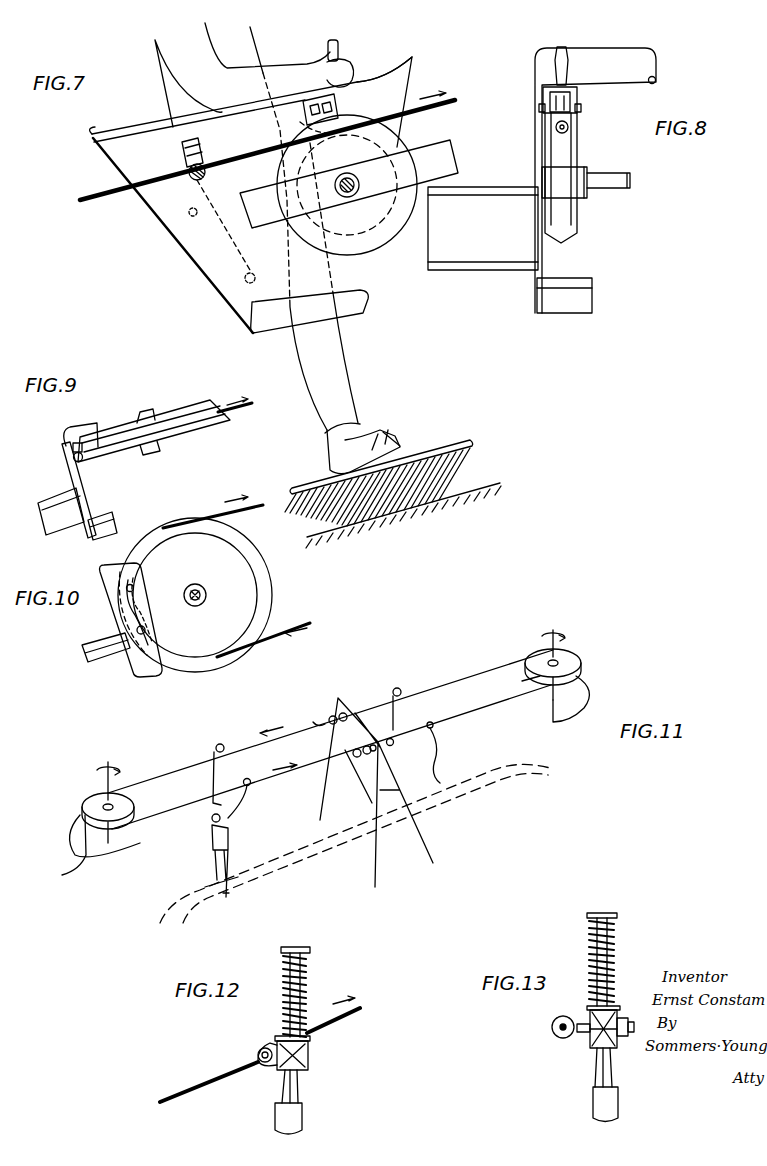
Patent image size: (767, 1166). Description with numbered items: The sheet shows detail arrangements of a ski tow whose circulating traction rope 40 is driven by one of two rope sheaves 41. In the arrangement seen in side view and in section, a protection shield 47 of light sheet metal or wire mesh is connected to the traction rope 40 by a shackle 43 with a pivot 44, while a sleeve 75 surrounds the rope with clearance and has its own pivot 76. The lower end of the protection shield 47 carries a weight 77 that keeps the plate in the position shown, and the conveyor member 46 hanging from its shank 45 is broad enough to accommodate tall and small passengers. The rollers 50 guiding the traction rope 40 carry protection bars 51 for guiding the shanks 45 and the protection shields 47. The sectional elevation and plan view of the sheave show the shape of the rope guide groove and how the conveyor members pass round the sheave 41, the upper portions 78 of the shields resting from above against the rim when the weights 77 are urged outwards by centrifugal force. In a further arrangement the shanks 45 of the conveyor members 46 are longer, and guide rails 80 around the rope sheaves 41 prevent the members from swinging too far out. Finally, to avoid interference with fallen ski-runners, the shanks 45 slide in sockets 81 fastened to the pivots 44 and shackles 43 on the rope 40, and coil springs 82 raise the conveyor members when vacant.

In FIG. 7, the circulating traction rope 40 is at (280, 145).
In FIG. 9, the circulating traction rope 40 is at (235, 396).
In FIG. 10, the circulating traction rope 40 is at (249, 576).
In FIG. 11, the circulating traction rope 40 is at (330, 739).
In FIG. 12, the circulating traction rope 40 is at (348, 1018).
In FIG. 13, the circulating traction rope 40 is at (555, 1032).
In FIG. 9, the rope sheaves 41 is at (187, 430).
In FIG. 11, the rope sheaves 41 is at (102, 797).
In FIG. 7, the pivotal shackles 43 is at (340, 128).
In FIG. 8, the pivotal shackles 43 is at (569, 128).
In FIG. 9, the pivotal shackles 43 is at (93, 460).
In FIG. 10, the pivotal shackles 43 is at (135, 585).
In FIG. 11, the pivotal shackles 43 is at (336, 754).
In FIG. 13, the pivotal shackles 43 is at (553, 1022).
In FIG. 7, the pivot 44 is at (338, 106).
In FIG. 8, the pivot 44 is at (578, 97).
In FIG. 11, the shank 45 is at (237, 817).
In FIG. 12, the shank 45 is at (302, 1115).
In FIG. 13, the shank 45 is at (598, 1098).
In FIG. 7, the conveyor member 46 is at (245, 270).
In FIG. 8, the conveyor member 46 is at (482, 252).
In FIG. 9, the conveyor member 46 is at (53, 500).
In FIG. 10, the conveyor member 46 is at (83, 653).
In FIG. 11, the conveyor member 46 is at (212, 858).
In FIG. 7, the protection shield 47 is at (150, 202).
In FIG. 8, the protection shield 47 is at (535, 120).
In FIG. 10, the protection shield 47 is at (103, 582).
In FIG. 7, the rollers 50 is at (386, 236).
In FIG. 8, the rollers 50 is at (578, 228).
In FIG. 11, the rollers 50 is at (328, 727).
In FIG. 7, the protection bars 51 is at (440, 156).
In FIG. 8, the protection bars 51 is at (572, 177).
In FIG. 11, the protection bars 51 is at (322, 722).
In FIG. 7, the sleeve 75 is at (206, 153).
In FIG. 10, the sleeve 75 is at (150, 627).
In FIG. 7, the pivot 76 is at (183, 153).
In FIG. 7, the weight 77 is at (262, 322).
In FIG. 8, the weight 77 is at (592, 297).
In FIG. 9, the weight 77 is at (110, 518).
In FIG. 7, the upper portions 78 is at (413, 58).
In FIG. 8, the upper portions 78 is at (653, 84).
In FIG. 9, the upper portions 78 is at (70, 428).
In FIG. 10, the upper portions 78 is at (139, 600).
In FIG. 11, the guide rails 80 is at (605, 687).
In FIG. 12, the sockets 81 is at (308, 1072).
In FIG. 13, the sockets 81 is at (605, 1042).
In FIG. 12, the coil springs 82 is at (307, 980).
In FIG. 13, the coil springs 82 is at (615, 952).